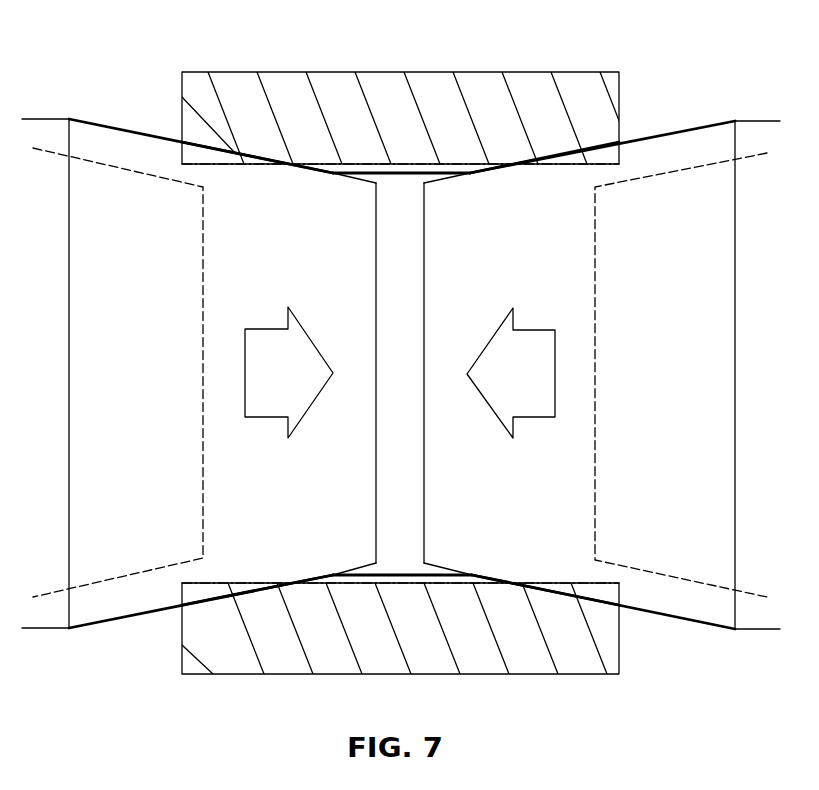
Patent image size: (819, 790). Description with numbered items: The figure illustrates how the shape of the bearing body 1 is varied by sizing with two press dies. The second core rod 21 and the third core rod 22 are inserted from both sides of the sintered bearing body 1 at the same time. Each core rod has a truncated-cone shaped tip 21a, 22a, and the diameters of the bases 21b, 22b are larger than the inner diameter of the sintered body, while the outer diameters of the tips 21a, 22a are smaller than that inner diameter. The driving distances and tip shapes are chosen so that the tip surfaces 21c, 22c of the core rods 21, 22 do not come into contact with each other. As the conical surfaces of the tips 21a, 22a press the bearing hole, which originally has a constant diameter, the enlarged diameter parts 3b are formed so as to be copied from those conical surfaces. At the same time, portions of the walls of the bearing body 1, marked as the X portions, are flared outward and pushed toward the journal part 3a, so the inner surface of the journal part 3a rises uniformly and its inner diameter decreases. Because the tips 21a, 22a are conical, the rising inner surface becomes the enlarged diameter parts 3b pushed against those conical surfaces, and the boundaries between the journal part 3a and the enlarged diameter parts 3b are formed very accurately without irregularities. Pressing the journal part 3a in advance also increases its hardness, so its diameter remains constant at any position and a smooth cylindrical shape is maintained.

The bearing body 1 is at (493, 87).
The second core rod 21 is at (53, 125).
The tip of the second core rod 21a is at (168, 147).
The base of the second core rod 21b is at (72, 612).
The tip surface of the second core rod 21c is at (377, 338).
The third core rod 22 is at (762, 128).
The tip of the third core rod 22a is at (643, 150).
The base of the third core rod 22b is at (737, 611).
The tip surface of the third core rod 22c is at (424, 437).
The journal part 3a is at (435, 175).
The enlarged diameter part 3b is at (233, 155).
The X portions X is at (213, 157).